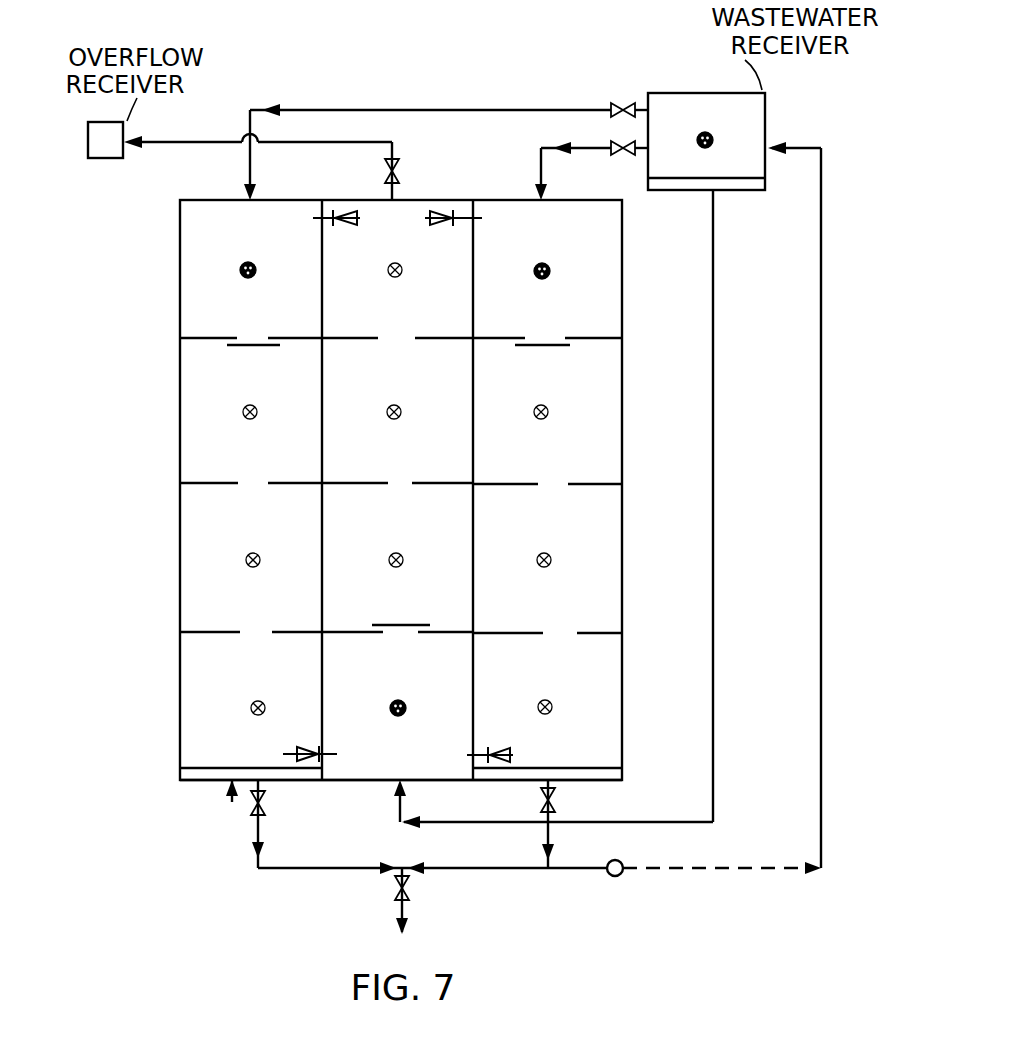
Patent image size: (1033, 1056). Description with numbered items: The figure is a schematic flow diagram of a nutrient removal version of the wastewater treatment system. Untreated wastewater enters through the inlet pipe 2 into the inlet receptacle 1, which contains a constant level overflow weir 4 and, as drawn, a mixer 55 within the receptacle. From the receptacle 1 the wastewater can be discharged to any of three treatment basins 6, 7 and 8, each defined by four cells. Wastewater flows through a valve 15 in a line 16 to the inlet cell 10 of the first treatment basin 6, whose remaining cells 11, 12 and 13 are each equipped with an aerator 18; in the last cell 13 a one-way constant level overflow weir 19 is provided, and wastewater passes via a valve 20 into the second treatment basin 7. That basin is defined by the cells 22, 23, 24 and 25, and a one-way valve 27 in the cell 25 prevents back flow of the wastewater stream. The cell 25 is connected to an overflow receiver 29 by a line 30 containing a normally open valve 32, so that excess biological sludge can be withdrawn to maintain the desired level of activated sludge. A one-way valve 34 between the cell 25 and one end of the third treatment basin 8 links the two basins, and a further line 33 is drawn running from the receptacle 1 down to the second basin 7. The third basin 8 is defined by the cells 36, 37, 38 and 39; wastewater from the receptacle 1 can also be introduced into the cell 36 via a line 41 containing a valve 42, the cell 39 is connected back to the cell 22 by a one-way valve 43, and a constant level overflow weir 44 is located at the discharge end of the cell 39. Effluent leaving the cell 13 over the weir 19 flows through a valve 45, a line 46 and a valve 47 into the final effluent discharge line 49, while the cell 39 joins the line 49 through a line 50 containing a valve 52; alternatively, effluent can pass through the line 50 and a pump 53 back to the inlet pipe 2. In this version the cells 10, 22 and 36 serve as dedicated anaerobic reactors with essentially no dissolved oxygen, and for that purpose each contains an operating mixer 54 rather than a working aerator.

The inlet receptacle 1 is at (768, 106).
The inlet pipe 2 is at (822, 548).
The constant level overflow weir 4 is at (718, 178).
The first treatment basin 6 is at (228, 800).
The second treatment basin 7 is at (372, 797).
The third treatment basin 8 is at (636, 733).
The inlet cell 10 is at (214, 330).
The cell 11 is at (212, 473).
The cell 12 is at (214, 620).
The last cell 13 is at (214, 667).
The valve 15 is at (617, 104).
The line 16 is at (641, 109).
The aerator 18 is at (401, 276).
The one-way constant level overflow weir 19 is at (260, 767).
The valve 20 is at (302, 750).
The cell 22 is at (332, 667).
The cell 23 is at (338, 520).
The cell 24 is at (332, 377).
The last cell 25 is at (332, 333).
The one-way valve 27 is at (340, 234).
The overflow receiver 29 is at (122, 160).
The line 30 is at (221, 142).
The normally open valve 32 is at (400, 172).
The pipe from wastewater receiver to tank 33 is at (712, 450).
The one-way valve 34 is at (447, 234).
The cell 36 is at (554, 240).
The cell 37 is at (559, 383).
The cell 38 is at (574, 525).
The cell 39 is at (572, 667).
The line 41 is at (639, 152).
The valve 42 is at (618, 156).
The one-way valve 43 is at (500, 750).
The constant level overflow weir 44 is at (550, 767).
The valve 45 is at (266, 800).
The line 46 is at (263, 870).
The valve 47 is at (410, 883).
The final effluent discharge line 49 is at (395, 896).
The line 50 is at (547, 835).
The valve 52 is at (556, 805).
The pump 53 is at (622, 876).
The mixer 54 is at (252, 278).
The spray nozzle in receiver 55 is at (697, 142).